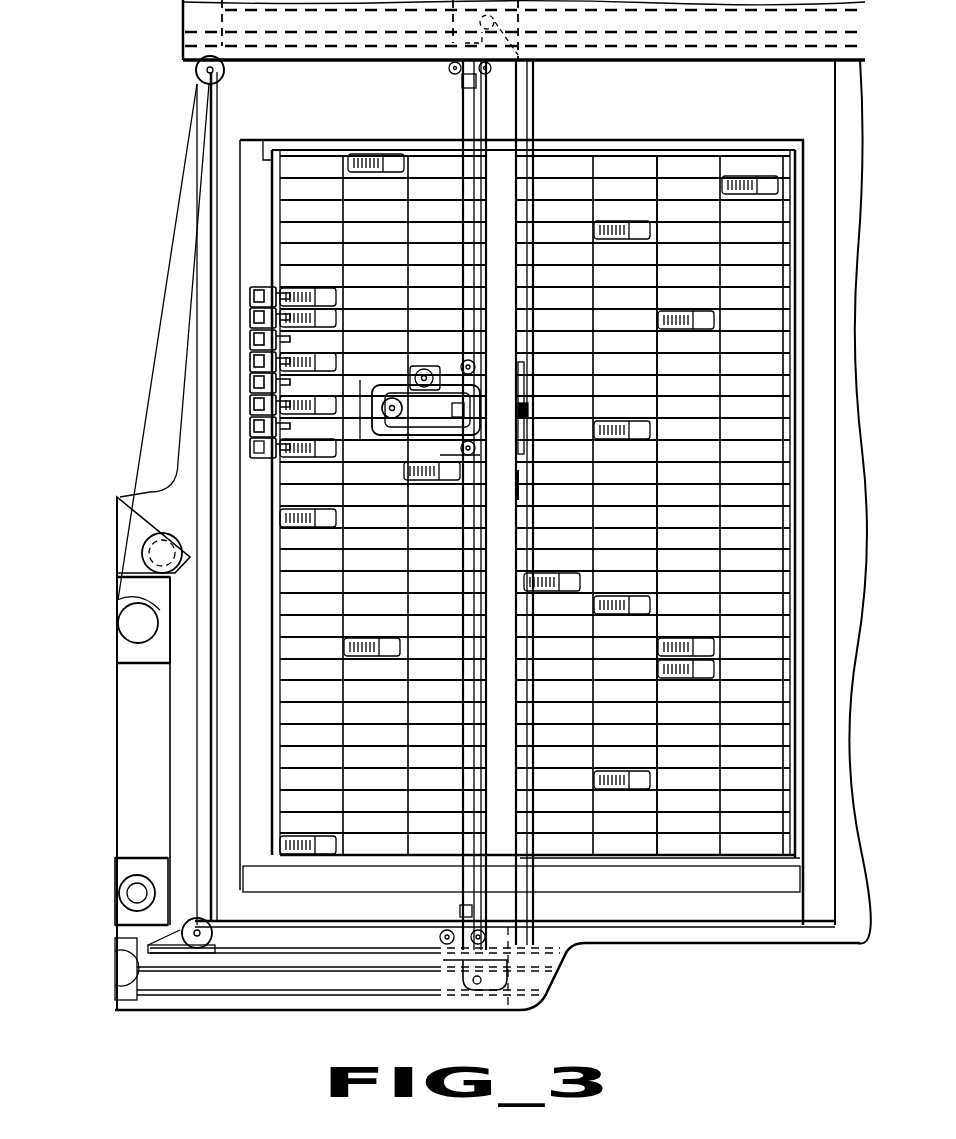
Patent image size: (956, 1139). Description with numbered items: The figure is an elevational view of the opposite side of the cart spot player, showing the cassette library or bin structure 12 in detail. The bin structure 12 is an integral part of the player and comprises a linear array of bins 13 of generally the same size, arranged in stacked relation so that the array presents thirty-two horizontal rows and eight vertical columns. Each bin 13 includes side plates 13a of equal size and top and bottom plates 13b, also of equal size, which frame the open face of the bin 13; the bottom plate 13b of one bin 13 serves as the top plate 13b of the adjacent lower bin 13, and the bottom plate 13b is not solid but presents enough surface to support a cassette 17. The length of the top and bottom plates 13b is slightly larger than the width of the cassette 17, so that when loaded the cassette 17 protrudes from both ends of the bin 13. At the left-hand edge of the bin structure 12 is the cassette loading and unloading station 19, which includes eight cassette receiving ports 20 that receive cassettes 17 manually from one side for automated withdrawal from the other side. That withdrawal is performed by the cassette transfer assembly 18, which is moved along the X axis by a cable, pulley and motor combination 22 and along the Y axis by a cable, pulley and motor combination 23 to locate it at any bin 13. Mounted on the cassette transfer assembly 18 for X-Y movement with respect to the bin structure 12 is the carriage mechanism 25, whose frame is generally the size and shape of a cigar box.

The cassette library 12 is at (556, 120).
The bin 13 is at (708, 253).
The side plates 13a is at (657, 218).
The top and bottom plates 13b is at (679, 220).
The cassette 17 is at (615, 222).
The cassette transfer assembly 18 is at (547, 386).
The cassette loading and unloading station 19 is at (251, 262).
The cassette receiving ports 20 is at (298, 458).
The cable, pulley and motor combination for the X direction 22 is at (126, 850).
The cable, pulley and motor combination for the Y direction 23 is at (133, 520).
The carriage mechanism 25 is at (426, 365).